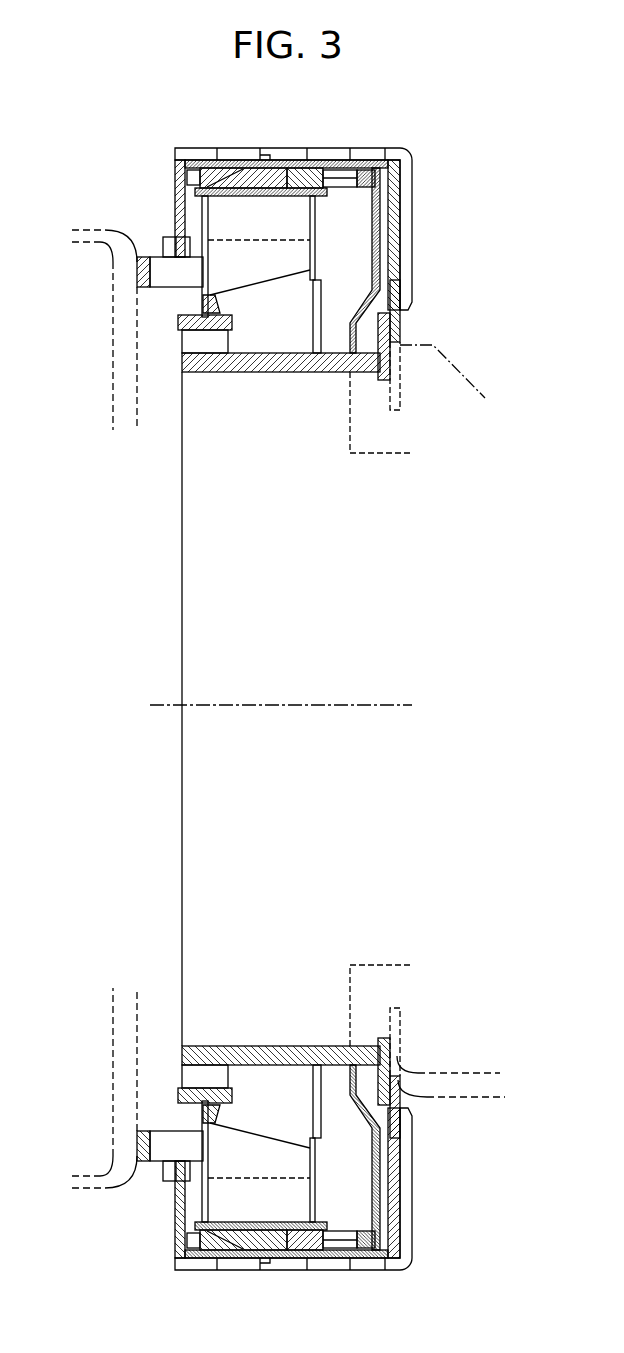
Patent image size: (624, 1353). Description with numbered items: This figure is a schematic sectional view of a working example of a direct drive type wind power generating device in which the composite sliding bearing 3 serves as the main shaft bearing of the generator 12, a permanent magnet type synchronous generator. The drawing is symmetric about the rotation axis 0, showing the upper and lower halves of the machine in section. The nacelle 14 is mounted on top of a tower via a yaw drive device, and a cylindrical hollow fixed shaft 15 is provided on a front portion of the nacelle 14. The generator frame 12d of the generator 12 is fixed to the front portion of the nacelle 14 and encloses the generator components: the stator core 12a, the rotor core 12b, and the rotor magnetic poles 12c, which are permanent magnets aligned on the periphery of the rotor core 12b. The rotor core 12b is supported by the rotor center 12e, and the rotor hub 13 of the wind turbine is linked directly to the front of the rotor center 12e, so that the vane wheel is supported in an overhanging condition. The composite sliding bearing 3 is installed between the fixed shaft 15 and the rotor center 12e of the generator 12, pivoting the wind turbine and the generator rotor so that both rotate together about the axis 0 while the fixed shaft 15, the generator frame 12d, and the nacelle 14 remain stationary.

The generator 12 is at (250, 154).
The stator core 12a is at (237, 186).
The rotor core 12b is at (317, 180).
The rotor magnetic poles 12c is at (282, 187).
The generator frame 12d is at (401, 168).
The rotor center 12e is at (204, 228).
The rotor hub 13 is at (103, 233).
The nacelle 14 is at (422, 368).
The fixed shaft 15 is at (238, 360).
The composite sliding bearing 3 is at (176, 336).
The rotation axis 0 is at (291, 706).